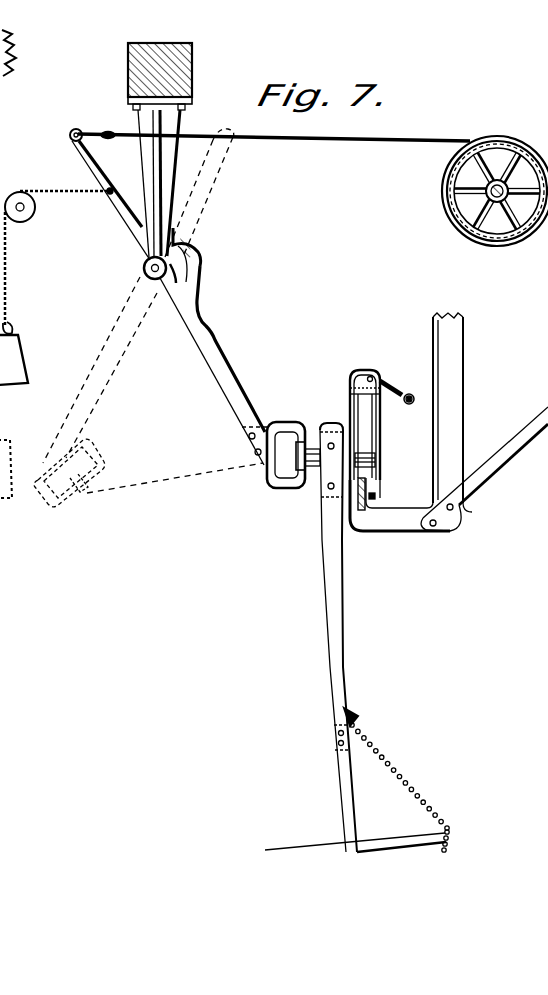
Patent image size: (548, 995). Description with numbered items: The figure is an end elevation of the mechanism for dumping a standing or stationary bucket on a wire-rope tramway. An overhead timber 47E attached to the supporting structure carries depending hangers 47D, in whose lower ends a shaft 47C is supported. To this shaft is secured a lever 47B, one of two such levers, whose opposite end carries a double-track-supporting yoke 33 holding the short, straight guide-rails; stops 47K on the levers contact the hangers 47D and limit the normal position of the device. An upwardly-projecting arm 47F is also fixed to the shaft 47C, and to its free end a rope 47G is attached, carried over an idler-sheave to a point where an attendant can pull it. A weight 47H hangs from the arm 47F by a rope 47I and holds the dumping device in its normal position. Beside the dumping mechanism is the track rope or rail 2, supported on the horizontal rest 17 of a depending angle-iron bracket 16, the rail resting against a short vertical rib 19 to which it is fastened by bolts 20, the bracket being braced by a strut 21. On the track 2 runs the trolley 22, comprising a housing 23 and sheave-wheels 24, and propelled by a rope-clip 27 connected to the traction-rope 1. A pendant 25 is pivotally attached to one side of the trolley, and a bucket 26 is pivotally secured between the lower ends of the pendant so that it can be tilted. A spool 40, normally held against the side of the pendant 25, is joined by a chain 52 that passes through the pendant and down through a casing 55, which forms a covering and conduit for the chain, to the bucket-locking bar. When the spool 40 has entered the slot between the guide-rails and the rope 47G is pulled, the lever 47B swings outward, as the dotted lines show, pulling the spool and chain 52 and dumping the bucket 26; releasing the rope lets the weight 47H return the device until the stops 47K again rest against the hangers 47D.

The overhead timber 47E is at (192, 54).
The depending hangers 47D is at (170, 181).
The rope 47G is at (341, 143).
The upwardly-projecting arm 47F is at (117, 208).
The rope 47I is at (10, 276).
The weight 47H is at (12, 353).
The shaft 47C is at (166, 268).
The stops 47K is at (200, 253).
The lever 47B is at (198, 352).
The double-track-supporting yoke 33 is at (277, 424).
The spool 40 is at (294, 456).
The pendant 25 is at (333, 643).
The trolley 22 is at (348, 410).
The housing 23 is at (380, 430).
The sheave-wheels 24 is at (378, 459).
The track rope or rail 2 is at (366, 483).
The vertical rib 19 is at (366, 493).
The bolts 20 is at (376, 498).
The rope-clip 27 is at (386, 389).
The traction-rope 1 is at (409, 404).
The angle-iron brackets 16 is at (448, 352).
The horizontal rest 17 is at (380, 531).
The strut 21 is at (497, 477).
The casing 55 is at (355, 712).
The chain 52 is at (395, 763).
The bucket 26 is at (386, 838).